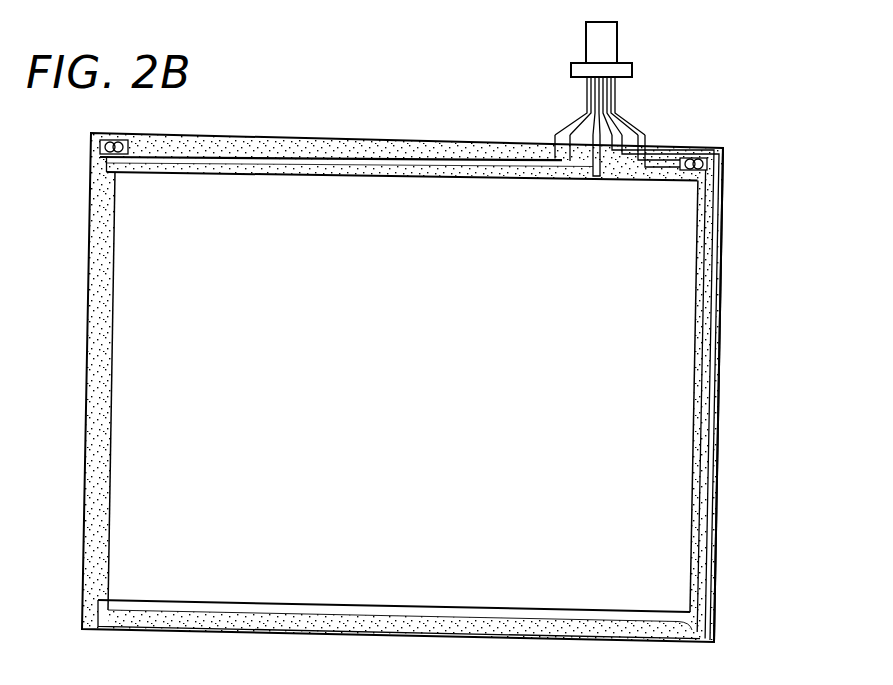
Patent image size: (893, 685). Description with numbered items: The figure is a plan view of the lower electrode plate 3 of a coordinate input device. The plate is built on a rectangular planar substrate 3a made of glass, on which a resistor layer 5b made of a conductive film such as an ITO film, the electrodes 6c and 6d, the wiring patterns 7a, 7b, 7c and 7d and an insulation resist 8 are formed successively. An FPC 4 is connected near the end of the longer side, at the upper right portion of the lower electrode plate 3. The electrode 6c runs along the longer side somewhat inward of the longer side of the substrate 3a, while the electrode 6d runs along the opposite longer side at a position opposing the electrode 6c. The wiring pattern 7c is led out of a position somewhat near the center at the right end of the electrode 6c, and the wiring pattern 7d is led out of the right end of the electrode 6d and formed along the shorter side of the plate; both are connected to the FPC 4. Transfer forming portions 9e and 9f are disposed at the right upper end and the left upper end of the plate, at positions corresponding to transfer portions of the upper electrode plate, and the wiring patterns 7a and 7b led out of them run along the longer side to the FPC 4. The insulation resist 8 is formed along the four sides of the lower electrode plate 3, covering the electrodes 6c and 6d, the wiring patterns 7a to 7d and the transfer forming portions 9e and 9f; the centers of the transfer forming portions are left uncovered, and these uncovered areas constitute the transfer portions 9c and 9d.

The lower electrode plate 3 is at (397, 117).
The substrate 3a is at (716, 587).
The FPC 4 is at (612, 46).
The resistor layer 5b is at (668, 380).
The electrode 6c is at (357, 170).
The electrode 6d is at (706, 622).
The wiring pattern 7a is at (632, 155).
The wiring pattern 7b is at (273, 158).
The wiring pattern 7c is at (580, 152).
The wiring pattern 7d is at (712, 264).
The insulation resist 8 is at (100, 240).
The transfer portion 9c is at (690, 160).
The transfer portion 9d is at (110, 142).
The transfer forming portion 9e is at (707, 164).
The transfer forming portion 9f is at (100, 149).